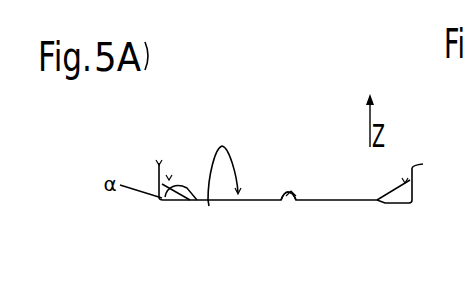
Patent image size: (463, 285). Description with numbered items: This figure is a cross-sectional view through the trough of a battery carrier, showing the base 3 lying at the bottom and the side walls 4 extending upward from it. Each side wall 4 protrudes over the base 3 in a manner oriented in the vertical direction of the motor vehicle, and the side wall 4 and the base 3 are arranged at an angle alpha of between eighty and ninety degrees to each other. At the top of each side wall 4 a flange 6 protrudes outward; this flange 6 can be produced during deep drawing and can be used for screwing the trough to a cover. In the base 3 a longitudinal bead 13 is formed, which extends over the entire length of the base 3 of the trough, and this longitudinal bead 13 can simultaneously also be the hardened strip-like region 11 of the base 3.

The base 3 is at (209, 202).
The side wall 4 is at (197, 203).
The flange 6 is at (159, 162).
The hardened strip-like region 11 is at (286, 194).
The longitudinal bead 13 is at (291, 186).